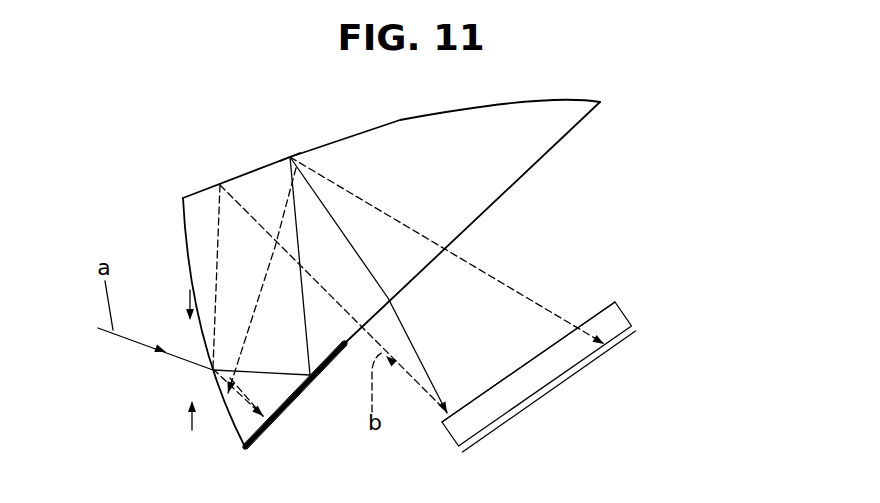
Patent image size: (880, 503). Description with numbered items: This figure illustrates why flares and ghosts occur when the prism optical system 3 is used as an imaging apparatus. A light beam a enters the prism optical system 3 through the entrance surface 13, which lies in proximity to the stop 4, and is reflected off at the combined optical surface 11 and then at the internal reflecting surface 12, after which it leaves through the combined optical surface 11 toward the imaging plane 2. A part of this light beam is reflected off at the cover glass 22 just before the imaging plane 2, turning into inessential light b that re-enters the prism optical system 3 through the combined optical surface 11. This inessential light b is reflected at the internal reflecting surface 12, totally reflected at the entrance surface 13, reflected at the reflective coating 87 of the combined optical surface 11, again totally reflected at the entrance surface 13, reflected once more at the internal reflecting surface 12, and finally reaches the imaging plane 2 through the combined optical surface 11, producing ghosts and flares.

The imaging plane 2 is at (581, 371).
The prism optical system 3 is at (565, 110).
The stop 4 is at (190, 420).
The combined optical surface 11 is at (507, 188).
The internal reflecting surface 12 is at (290, 157).
The entrance surface 13 is at (236, 420).
The cover glass 22 is at (617, 318).
The reflective coating 87 is at (284, 410).